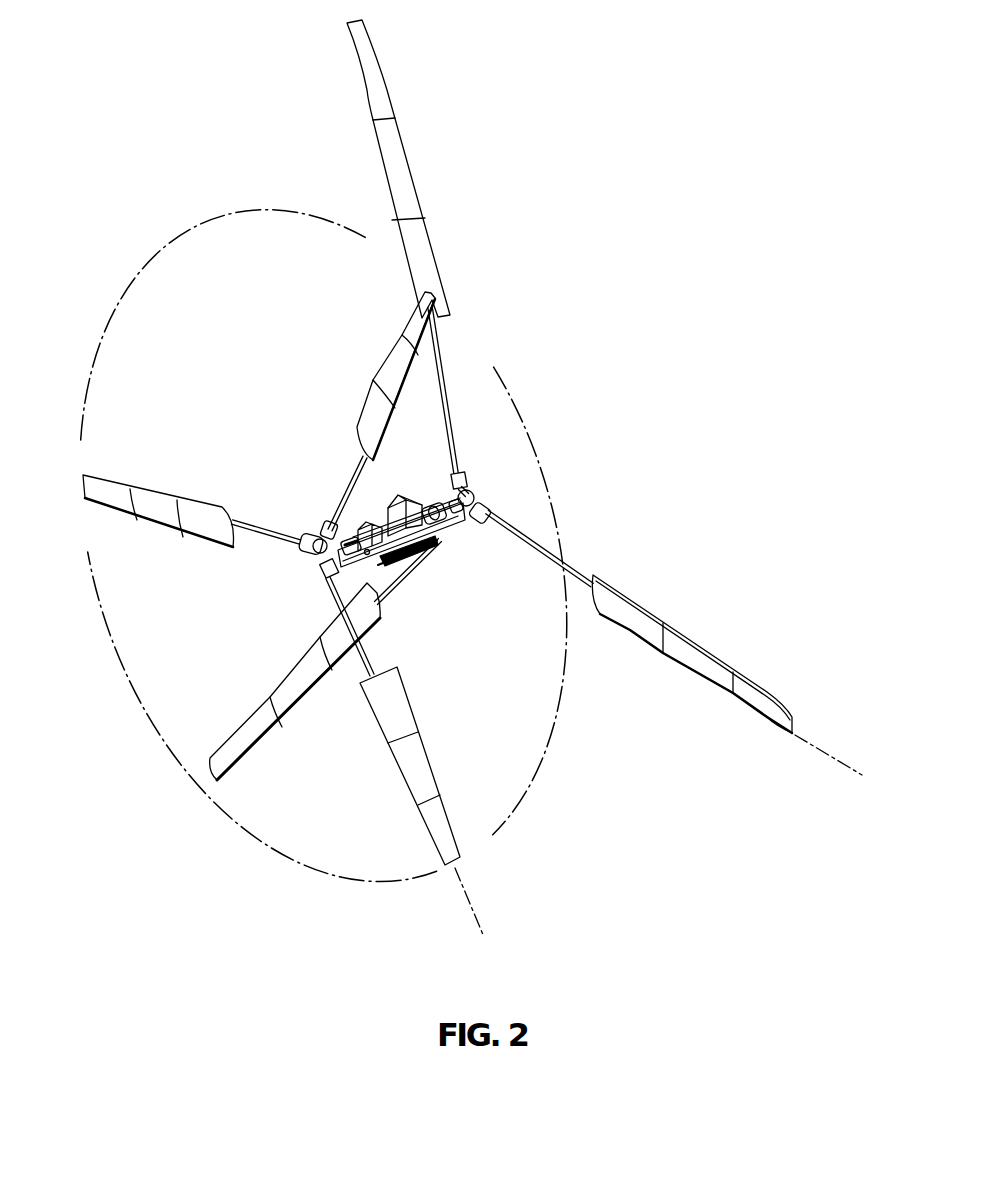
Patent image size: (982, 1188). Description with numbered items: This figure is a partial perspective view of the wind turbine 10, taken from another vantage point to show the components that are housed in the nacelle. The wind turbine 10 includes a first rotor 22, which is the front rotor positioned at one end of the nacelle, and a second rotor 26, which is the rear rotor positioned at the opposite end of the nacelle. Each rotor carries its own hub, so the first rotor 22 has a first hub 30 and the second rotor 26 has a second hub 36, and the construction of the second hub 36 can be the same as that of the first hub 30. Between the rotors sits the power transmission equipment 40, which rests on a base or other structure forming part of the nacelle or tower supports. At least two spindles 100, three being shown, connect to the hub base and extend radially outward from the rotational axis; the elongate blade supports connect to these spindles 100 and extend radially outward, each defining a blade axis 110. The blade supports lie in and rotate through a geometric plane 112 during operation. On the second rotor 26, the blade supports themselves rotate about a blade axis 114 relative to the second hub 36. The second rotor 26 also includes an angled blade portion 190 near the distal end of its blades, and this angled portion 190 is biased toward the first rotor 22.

The wind turbine 10 is at (327, 437).
The first rotor 22 is at (259, 541).
The second rotor 26 is at (423, 179).
The first hub 30 is at (315, 571).
The second hub 36 is at (476, 493).
The power transmission equipment 40 is at (393, 488).
The spindles 100 is at (318, 534).
The blade axis 110 is at (475, 915).
The geometric plane 112 is at (497, 366).
The blade axis 114 is at (850, 765).
The angled blade portion 190 is at (433, 169).